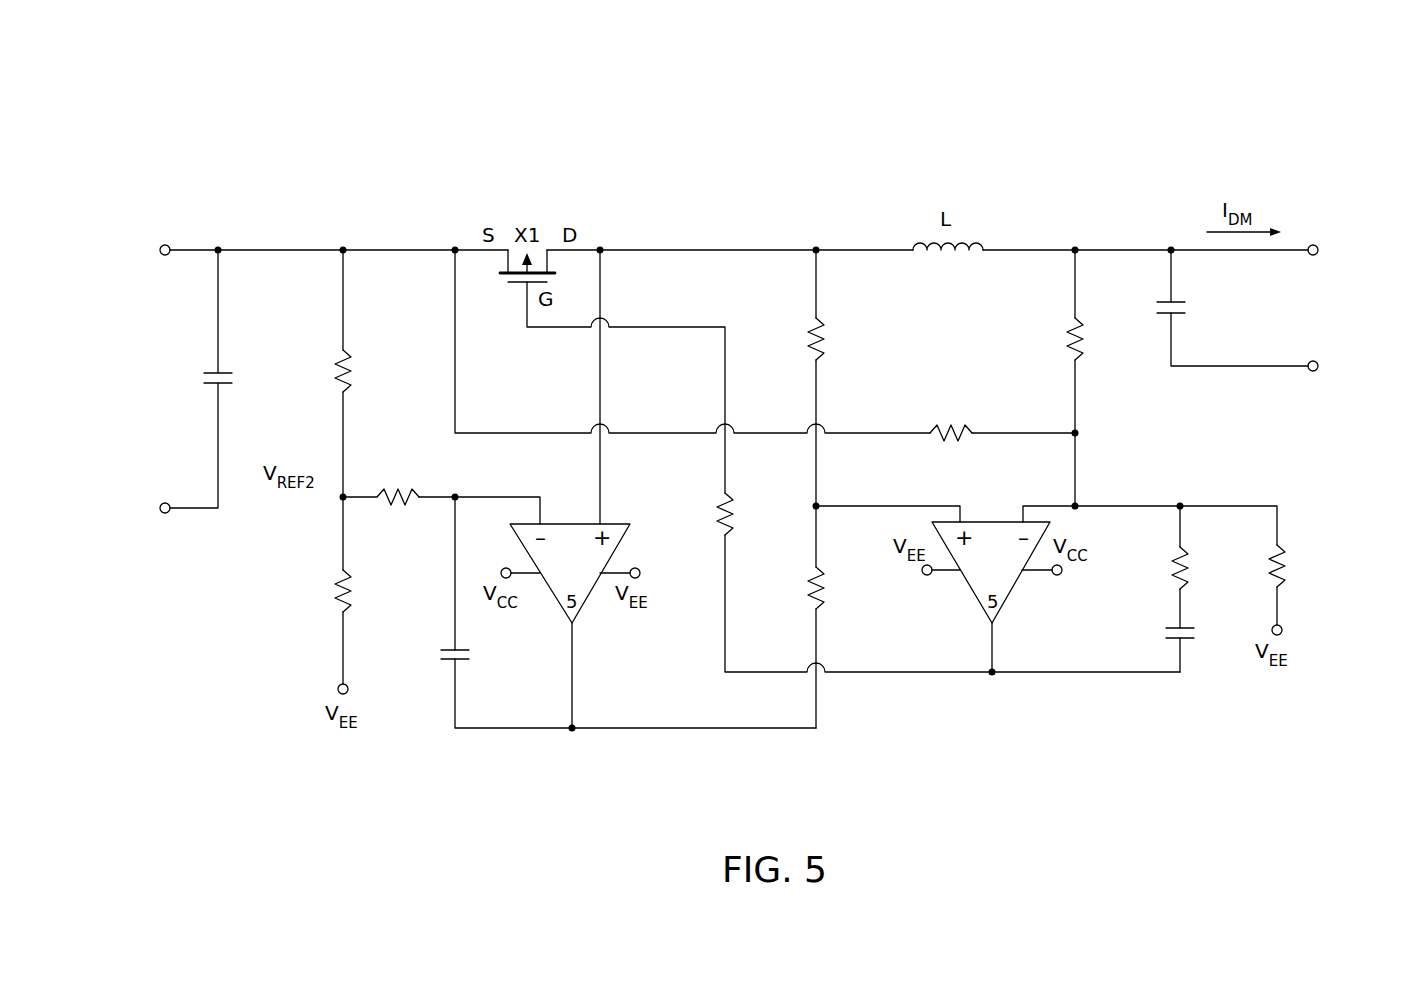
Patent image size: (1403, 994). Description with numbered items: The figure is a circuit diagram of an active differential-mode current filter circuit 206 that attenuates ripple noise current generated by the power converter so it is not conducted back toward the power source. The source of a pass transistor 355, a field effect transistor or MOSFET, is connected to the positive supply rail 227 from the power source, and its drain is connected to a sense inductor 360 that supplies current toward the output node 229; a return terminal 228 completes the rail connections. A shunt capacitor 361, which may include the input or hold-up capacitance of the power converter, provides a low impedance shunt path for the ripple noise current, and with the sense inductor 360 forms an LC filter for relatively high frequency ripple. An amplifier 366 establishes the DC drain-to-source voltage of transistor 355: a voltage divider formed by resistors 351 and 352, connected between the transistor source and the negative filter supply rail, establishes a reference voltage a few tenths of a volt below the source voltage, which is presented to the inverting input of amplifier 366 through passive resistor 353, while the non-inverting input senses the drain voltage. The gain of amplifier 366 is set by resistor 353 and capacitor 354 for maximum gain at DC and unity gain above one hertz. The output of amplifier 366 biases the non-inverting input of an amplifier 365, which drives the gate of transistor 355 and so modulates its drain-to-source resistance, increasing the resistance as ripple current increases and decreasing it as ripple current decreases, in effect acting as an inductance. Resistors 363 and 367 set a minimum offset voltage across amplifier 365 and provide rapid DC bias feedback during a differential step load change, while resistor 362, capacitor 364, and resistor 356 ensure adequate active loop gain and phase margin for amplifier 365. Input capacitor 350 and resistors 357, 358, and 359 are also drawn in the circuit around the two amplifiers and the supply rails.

The active differential-mode current filter circuit 206 is at (256, 146).
The positive supply rail 227 is at (168, 244).
The return terminal 228 is at (168, 513).
The output node 229 is at (1316, 245).
The capacitor 350 is at (236, 385).
The voltage divider resistor 351 is at (350, 383).
The voltage divider resistor 352 is at (340, 592).
The passive resistor 353 is at (396, 490).
The capacitor 354 is at (470, 656).
The pass transistor 355 is at (514, 285).
The resistor 356 is at (723, 500).
The resistor 357 is at (825, 345).
The resistor 358 is at (825, 604).
The resistor 359 is at (1070, 346).
The sense inductor 360 is at (966, 240).
The shunt capacitor 361 is at (1188, 309).
The resistor 362 is at (1174, 568).
The resistor 363 is at (1284, 568).
The capacitor 364 is at (1198, 636).
The amplifier 365 is at (1000, 612).
The amplifier 366 is at (612, 557).
The resistor 367 is at (950, 430).